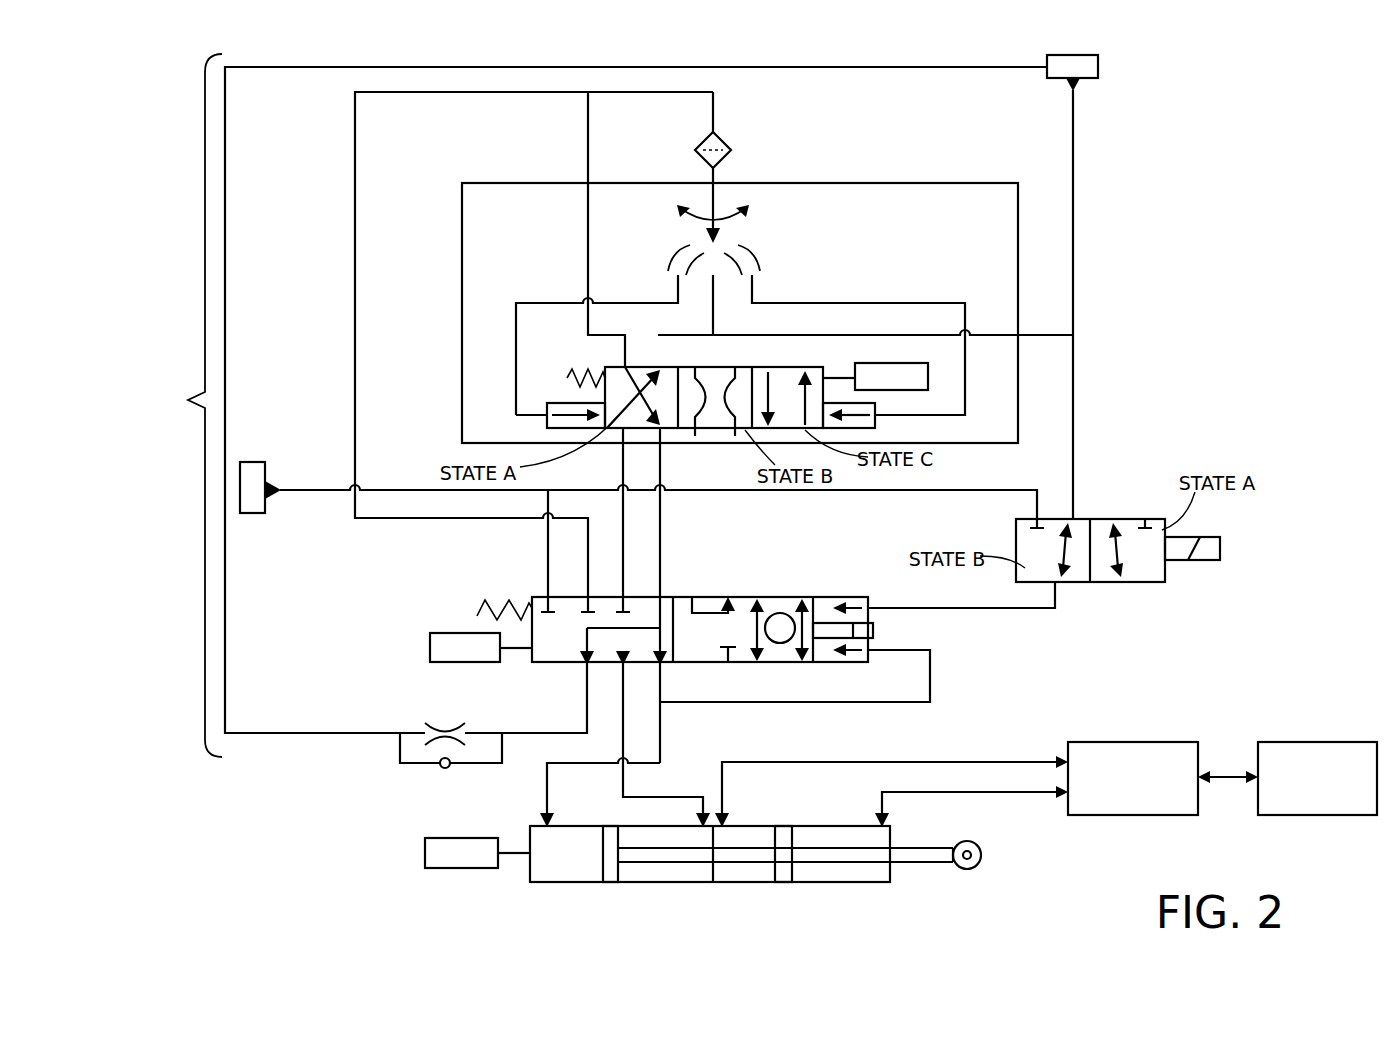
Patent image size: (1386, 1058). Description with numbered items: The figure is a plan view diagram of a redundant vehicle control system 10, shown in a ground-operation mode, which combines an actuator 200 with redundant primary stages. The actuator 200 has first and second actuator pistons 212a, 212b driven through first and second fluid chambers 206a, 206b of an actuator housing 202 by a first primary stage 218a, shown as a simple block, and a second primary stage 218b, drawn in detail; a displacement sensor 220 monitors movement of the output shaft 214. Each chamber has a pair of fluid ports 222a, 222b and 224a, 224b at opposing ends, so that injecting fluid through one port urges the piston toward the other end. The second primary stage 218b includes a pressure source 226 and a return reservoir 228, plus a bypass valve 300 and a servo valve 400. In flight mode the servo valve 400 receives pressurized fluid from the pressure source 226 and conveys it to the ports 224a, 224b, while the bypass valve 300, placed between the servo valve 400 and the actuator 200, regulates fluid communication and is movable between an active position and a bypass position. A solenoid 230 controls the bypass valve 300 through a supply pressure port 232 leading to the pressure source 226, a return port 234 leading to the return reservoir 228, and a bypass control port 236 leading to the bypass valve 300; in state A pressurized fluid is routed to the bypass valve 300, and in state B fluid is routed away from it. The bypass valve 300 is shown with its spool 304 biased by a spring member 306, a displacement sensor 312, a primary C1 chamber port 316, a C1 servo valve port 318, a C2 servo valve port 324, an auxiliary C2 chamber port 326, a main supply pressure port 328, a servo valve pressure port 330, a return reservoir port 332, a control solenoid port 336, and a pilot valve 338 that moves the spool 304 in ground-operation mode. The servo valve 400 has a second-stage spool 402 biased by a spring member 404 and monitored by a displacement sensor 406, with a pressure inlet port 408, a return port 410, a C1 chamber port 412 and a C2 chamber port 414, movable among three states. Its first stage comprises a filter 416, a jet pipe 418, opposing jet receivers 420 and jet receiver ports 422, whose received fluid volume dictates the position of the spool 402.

The redundant vehicle control system 10 is at (1170, 177).
The actuator 200 is at (762, 886).
The actuator housing 202 is at (896, 878).
The first fluid chamber 206a is at (831, 878).
The second fluid chamber 206b is at (656, 878).
The first actuator piston 212a is at (785, 884).
The second actuator piston 212b is at (610, 884).
The output shaft 214 is at (910, 848).
The first primary stage 218a is at (1163, 778).
The second primary stage 218b is at (597, 411).
The displacement sensor 220 is at (461, 870).
The fluid port 222a is at (880, 822).
The fluid port 222b is at (725, 822).
The fluid port 224a is at (706, 822).
The fluid port 224b is at (544, 822).
The pressure source 226 is at (278, 482).
The return reservoir 228 is at (1080, 86).
The solenoid 230 is at (1145, 473).
The supply pressure port 232 is at (1035, 517).
The return port 234 is at (1073, 520).
The bypass control port 236 is at (1056, 582).
The bypass valve 300 is at (806, 572).
The spool 304 is at (740, 596).
The spring member 306 is at (487, 608).
The displacement sensor 312 is at (468, 665).
The primary C1 chamber port 316 is at (663, 662).
The C1 servo valve port 318 is at (662, 597).
The C2 servo valve port 324 is at (627, 596).
The auxiliary C2 chamber port 326 is at (616, 668).
The main supply pressure port 328 is at (548, 600).
The servo valve pressure port 330 is at (590, 596).
The return reservoir port 332 is at (583, 661).
The control solenoid port 336 is at (855, 598).
The pilot valve 338 is at (870, 641).
The servo valve 400 is at (892, 150).
The spool 402 is at (742, 366).
The spring member 404 is at (573, 372).
The displacement sensor 406 is at (858, 364).
The pressure inlet port 408 is at (628, 362).
The return port 410 is at (655, 376).
The C1 chamber port 412 is at (668, 430).
The C2 chamber port 414 is at (657, 374).
The filter 416 is at (724, 140).
The jet pipe 418 is at (727, 216).
The jet receivers 420 is at (684, 261).
The jet receiver ports 422 is at (552, 406).